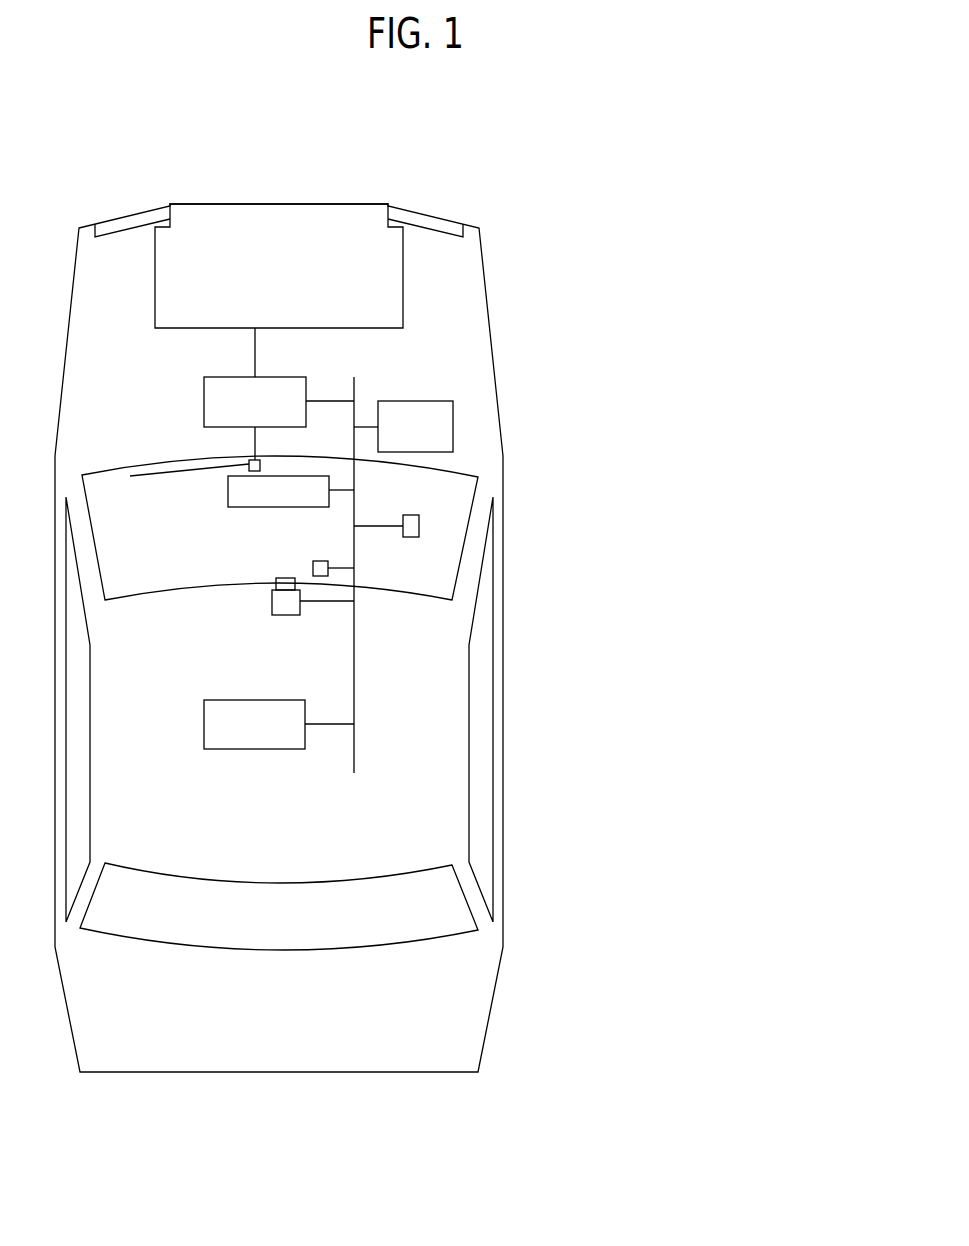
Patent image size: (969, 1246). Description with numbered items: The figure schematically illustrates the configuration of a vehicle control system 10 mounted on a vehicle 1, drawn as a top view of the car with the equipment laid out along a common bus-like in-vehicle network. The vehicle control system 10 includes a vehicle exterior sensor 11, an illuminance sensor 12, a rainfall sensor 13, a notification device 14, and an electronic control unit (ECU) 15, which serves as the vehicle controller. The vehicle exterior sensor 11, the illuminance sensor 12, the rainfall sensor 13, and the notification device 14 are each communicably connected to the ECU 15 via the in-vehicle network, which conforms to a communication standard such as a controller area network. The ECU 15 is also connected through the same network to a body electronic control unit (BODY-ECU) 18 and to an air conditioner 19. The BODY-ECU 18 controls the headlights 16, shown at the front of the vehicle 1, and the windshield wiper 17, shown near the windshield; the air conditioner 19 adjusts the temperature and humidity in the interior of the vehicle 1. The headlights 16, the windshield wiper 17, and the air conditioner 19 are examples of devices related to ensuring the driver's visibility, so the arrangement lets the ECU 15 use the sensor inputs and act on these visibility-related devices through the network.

The vehicle 1 is at (503, 887).
The vehicle control system 10 is at (757, 963).
The vehicle exterior sensor 11 is at (272, 602).
The illuminance sensor 12 is at (419, 523).
The rainfall sensor 13 is at (315, 561).
The notification device 14 is at (240, 507).
The electronic control unit (ECU) 15 is at (454, 437).
The headlights 16 is at (432, 212).
The windshield wiper 17 is at (150, 477).
The electronic control unit (BODY-ECU) 18 is at (204, 395).
The air conditioner 19 is at (245, 749).